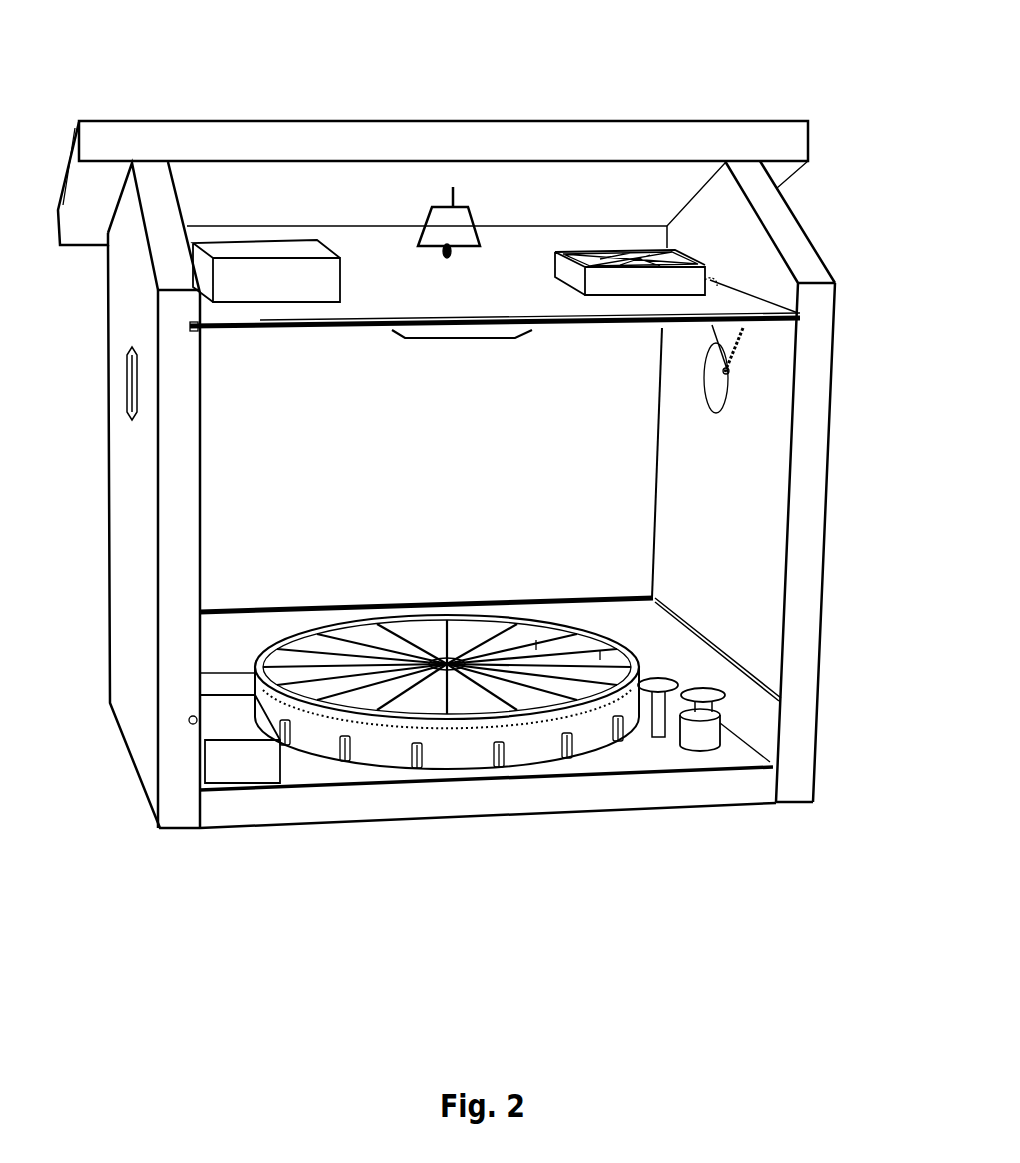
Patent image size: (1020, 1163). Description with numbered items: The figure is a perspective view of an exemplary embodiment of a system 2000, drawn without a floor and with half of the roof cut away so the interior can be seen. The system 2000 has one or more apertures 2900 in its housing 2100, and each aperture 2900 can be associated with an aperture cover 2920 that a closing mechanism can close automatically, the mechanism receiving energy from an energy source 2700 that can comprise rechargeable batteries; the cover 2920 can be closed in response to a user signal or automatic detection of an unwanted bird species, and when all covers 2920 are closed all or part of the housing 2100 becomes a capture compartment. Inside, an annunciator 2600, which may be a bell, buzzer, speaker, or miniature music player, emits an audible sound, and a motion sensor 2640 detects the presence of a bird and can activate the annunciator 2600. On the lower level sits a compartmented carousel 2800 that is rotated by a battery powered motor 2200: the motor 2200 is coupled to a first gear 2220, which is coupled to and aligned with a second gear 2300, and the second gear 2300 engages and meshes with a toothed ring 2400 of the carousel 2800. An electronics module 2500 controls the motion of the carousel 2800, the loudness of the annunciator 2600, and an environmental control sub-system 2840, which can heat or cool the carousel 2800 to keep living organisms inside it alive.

The system 2000 is at (429, 57).
The housing 2100 is at (281, 539).
The battery powered motor 2200 is at (708, 728).
The first gear 2220 is at (708, 690).
The second gear 2300 is at (667, 677).
The toothed ring 2400 is at (638, 670).
The electronics module 2500 is at (243, 255).
The annunciator 2600 is at (456, 233).
The motion sensor 2640 is at (445, 337).
The energy source 2700 is at (622, 247).
The compartmented carousel 2800 is at (277, 637).
The environmental control sub-system 2840 is at (245, 763).
The aperture 2900 is at (720, 365).
The aperture cover 2920 is at (724, 340).